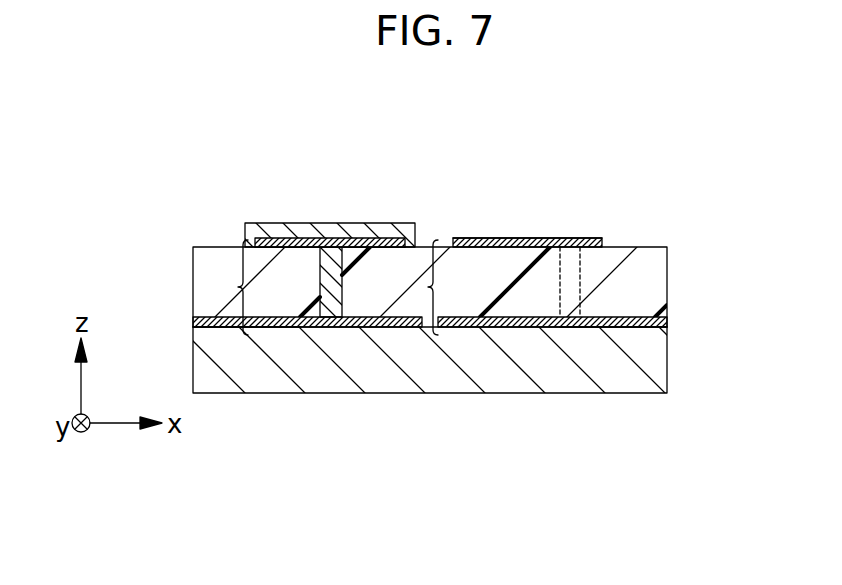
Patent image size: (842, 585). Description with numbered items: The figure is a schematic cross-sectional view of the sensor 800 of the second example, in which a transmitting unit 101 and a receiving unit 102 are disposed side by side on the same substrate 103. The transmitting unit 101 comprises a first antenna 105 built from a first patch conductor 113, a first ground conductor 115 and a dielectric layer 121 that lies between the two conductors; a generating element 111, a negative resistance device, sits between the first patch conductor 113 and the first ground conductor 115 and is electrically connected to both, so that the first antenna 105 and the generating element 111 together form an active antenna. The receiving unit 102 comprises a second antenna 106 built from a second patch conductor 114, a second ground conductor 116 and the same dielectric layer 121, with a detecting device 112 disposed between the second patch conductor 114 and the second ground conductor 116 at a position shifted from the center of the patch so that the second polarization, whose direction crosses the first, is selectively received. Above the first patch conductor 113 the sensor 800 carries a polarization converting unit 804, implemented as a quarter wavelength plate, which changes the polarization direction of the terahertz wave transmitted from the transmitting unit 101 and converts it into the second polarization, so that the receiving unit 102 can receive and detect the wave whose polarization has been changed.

The sensor 800 is at (452, 507).
The transmitting unit 101 is at (403, 210).
The receiving unit 102 is at (602, 213).
The substrate 103 is at (655, 343).
The first antenna 105 is at (238, 287).
The second antenna 106 is at (428, 287).
The generating element 111 is at (330, 300).
The detecting device 112 is at (568, 290).
The first patch conductor 113 is at (381, 322).
The second patch conductor 114 is at (492, 240).
The first ground conductor 115 is at (248, 327).
The second ground conductor 116 is at (622, 318).
The dielectric layer 121 is at (655, 278).
The polarization converting unit 804 is at (250, 228).